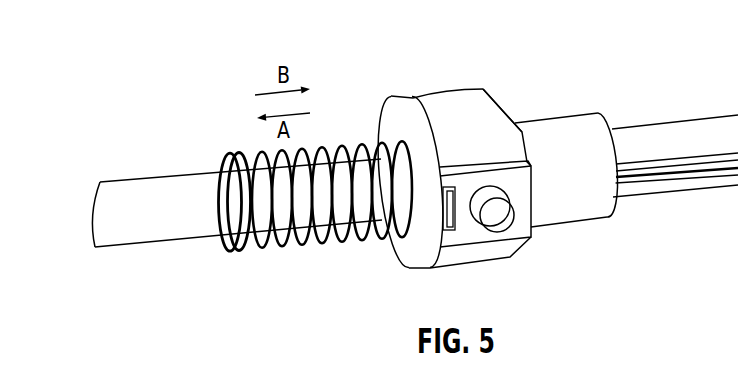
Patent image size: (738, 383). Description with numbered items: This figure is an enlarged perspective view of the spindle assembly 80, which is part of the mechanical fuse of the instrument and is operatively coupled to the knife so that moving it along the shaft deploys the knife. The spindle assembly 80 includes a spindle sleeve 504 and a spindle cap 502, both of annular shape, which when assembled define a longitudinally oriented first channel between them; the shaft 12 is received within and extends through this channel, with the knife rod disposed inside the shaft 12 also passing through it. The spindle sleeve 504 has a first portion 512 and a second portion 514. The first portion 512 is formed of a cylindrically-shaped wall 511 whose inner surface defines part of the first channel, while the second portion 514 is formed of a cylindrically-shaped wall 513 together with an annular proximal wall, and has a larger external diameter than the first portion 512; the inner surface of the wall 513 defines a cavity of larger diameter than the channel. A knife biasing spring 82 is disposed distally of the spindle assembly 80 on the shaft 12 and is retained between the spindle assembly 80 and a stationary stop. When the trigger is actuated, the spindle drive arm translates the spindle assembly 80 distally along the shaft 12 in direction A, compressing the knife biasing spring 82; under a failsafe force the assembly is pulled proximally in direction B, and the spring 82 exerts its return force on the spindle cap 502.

The shaft 12 is at (163, 176).
The knife biasing spring 82 is at (236, 151).
The spindle assembly 80 is at (483, 26).
The spindle cap 502 is at (393, 86).
The spindle sleeve 504 is at (460, 78).
The second portion 514 is at (490, 115).
The cylindrically-shaped wall 513 is at (495, 97).
The first portion 512 is at (558, 113).
The cylindrically-shaped wall 511 is at (597, 128).